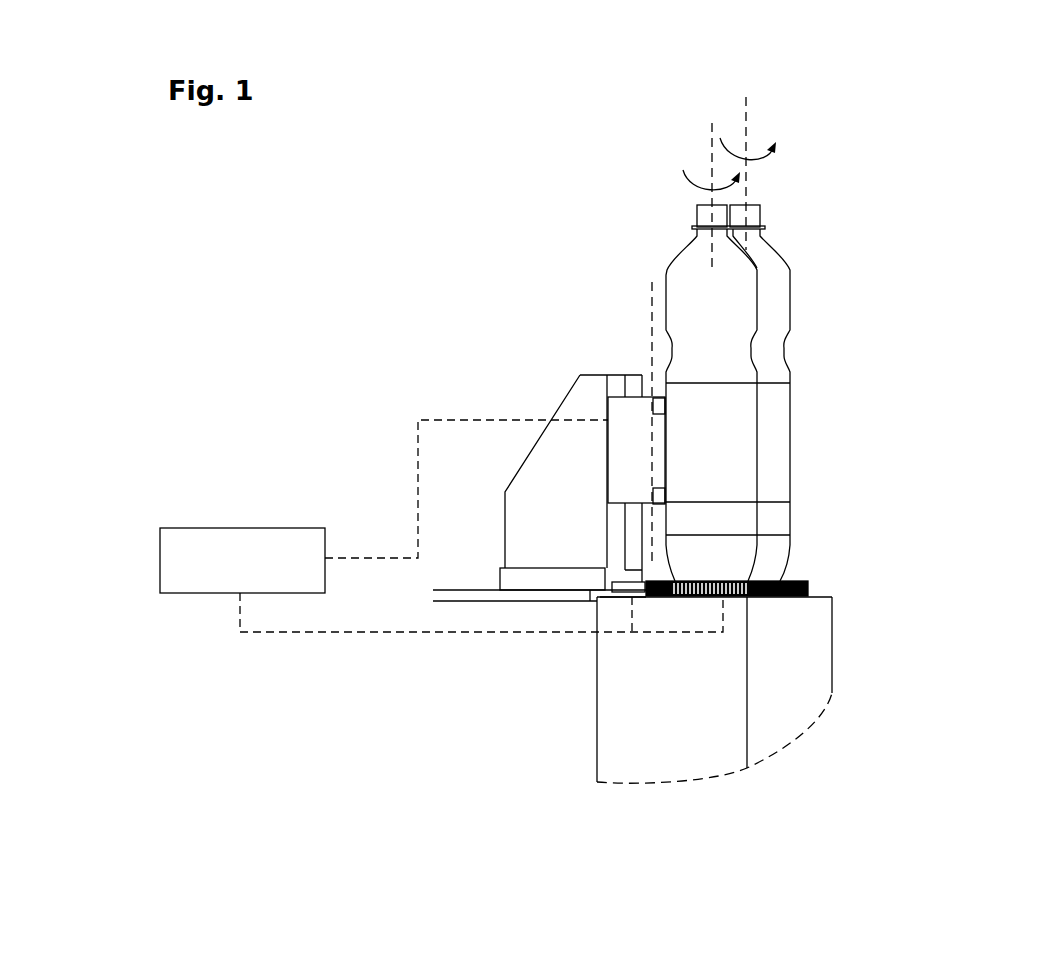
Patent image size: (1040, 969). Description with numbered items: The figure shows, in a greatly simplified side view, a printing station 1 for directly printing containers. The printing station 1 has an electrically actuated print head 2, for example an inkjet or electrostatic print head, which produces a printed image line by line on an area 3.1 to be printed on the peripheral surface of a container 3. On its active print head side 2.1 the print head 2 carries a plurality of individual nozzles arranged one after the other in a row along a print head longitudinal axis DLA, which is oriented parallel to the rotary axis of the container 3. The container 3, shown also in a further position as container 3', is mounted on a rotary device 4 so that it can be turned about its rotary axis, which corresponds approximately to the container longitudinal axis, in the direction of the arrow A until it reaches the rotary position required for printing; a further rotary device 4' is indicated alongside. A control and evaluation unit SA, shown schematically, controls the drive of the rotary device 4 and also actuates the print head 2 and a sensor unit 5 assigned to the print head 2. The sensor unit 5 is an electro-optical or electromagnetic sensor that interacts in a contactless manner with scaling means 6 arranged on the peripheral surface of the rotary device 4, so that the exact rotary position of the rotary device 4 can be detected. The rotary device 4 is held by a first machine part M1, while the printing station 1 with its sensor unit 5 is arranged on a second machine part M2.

The printing station 1 is at (499, 343).
The print head 2 is at (637, 432).
The active print head side 2.1 is at (676, 437).
The container 3 is at (772, 393).
The container 3' is at (791, 393).
The area to be printed 3.1 is at (685, 454).
The rotary device 4 is at (799, 532).
The rotary device 4' is at (710, 588).
The sensor unit 5 is at (623, 587).
The scaling means 6 is at (810, 588).
The first machine part M1 is at (812, 668).
The second machine part M2 is at (482, 595).
The control and evaluation unit SA is at (441, 526).
The print head longitudinal axis DLA is at (630, 407).
The arrow A is at (728, 157).